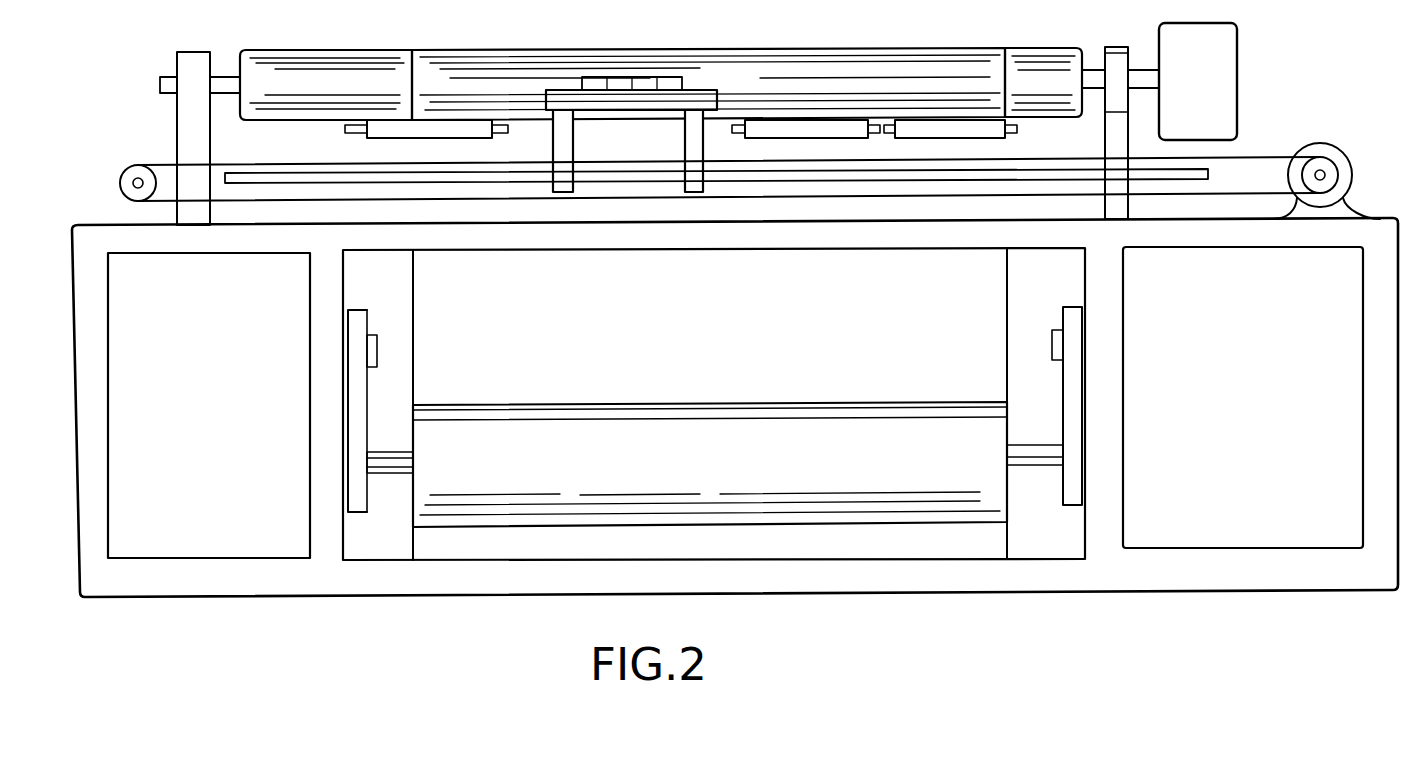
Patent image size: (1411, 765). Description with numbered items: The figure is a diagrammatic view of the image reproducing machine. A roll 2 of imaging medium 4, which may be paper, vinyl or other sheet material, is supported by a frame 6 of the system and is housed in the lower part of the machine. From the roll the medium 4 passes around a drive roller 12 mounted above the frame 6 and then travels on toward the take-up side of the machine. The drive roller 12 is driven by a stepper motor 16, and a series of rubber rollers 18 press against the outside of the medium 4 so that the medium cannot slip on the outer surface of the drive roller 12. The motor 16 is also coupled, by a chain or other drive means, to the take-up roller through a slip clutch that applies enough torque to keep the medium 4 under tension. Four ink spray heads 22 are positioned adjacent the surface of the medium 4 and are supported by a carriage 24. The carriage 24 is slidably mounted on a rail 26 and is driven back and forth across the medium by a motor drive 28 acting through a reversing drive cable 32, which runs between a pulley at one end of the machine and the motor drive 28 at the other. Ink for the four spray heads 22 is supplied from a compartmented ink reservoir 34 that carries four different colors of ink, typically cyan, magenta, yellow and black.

The roll 2 is at (636, 405).
The imaging medium 4 is at (408, 283).
The frame 6 is at (76, 475).
The drive roller 12 is at (1035, 47).
The motor 16 is at (1225, 57).
The rubber rollers 18 is at (383, 140).
The ink spray heads 22 is at (675, 66).
The carriage 24 is at (705, 122).
The rail 26 is at (285, 187).
The motor drive 28 is at (1332, 143).
The reversing drive cable 32 is at (1213, 191).
The compartmented ink reservoir 34 is at (734, 79).